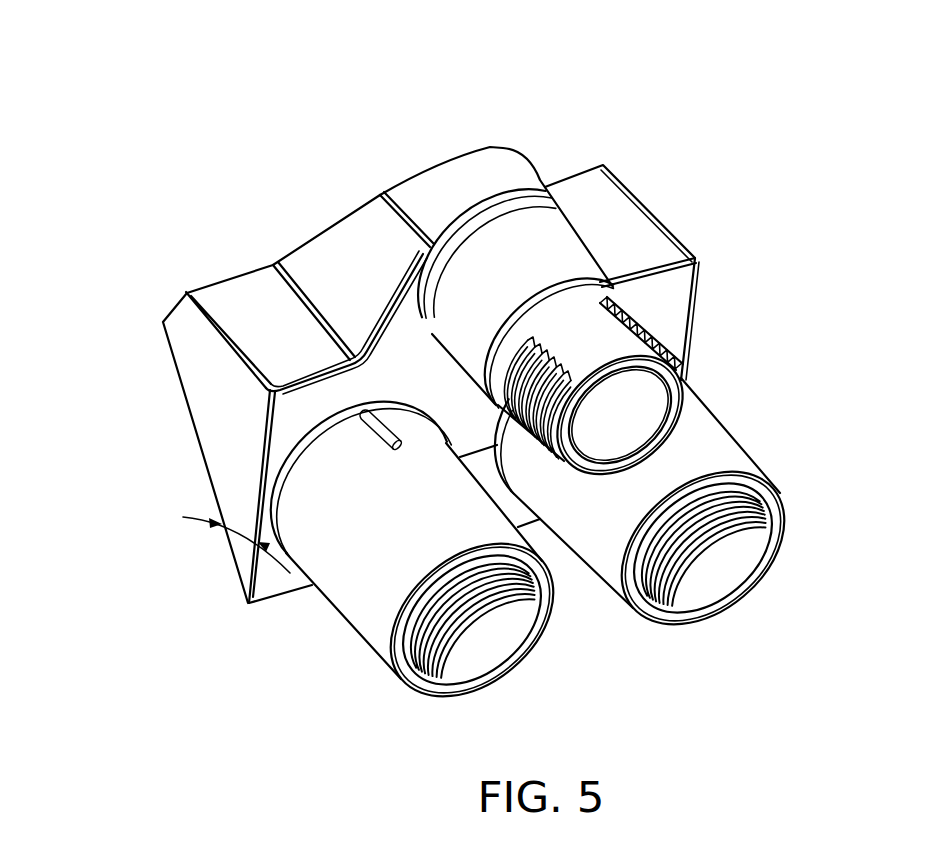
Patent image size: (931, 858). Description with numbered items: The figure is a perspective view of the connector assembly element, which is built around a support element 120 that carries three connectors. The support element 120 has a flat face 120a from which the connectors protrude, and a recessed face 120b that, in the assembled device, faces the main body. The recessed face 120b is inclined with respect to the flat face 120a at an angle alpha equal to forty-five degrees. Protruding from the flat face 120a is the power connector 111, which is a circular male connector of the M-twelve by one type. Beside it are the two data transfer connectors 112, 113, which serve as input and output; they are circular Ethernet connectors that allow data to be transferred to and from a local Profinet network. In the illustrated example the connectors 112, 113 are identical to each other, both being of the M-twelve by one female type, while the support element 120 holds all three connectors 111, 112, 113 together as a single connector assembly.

The support element 120 is at (416, 321).
The flat face 120a is at (655, 305).
The recessed face 120b is at (190, 431).
The power connector 111 is at (492, 236).
The data transfer connector 112 is at (350, 596).
The data transfer connector 113 is at (695, 445).